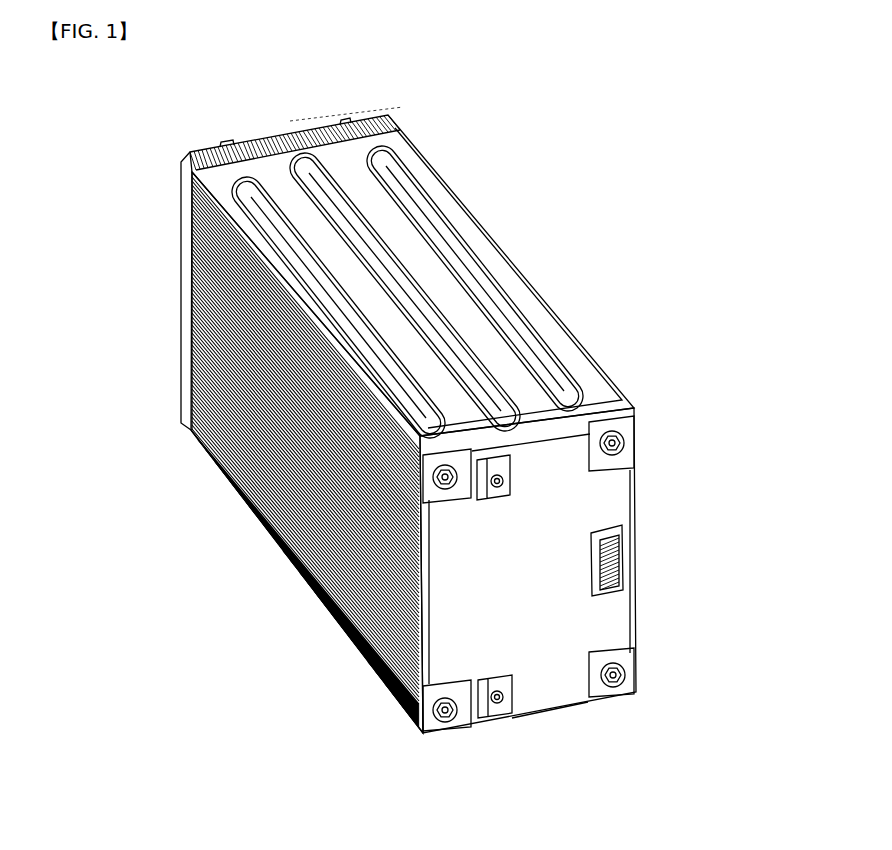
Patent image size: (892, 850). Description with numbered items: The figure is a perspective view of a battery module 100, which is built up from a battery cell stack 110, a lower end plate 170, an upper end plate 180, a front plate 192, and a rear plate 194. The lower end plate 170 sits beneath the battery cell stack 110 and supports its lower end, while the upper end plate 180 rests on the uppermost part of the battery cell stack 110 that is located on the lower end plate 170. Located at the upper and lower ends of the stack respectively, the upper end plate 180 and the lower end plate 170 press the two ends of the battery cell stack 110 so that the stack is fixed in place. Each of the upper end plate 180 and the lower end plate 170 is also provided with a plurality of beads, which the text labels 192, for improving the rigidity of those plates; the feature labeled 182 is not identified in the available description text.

The battery module 100 is at (112, 128).
The battery cell stack 110 is at (207, 487).
The lower end plate 170 is at (388, 678).
The upper end plate 180 is at (584, 353).
The slot 182 is at (507, 305).
The front plate 192 is at (611, 609).
The rear plate 194 is at (179, 373).